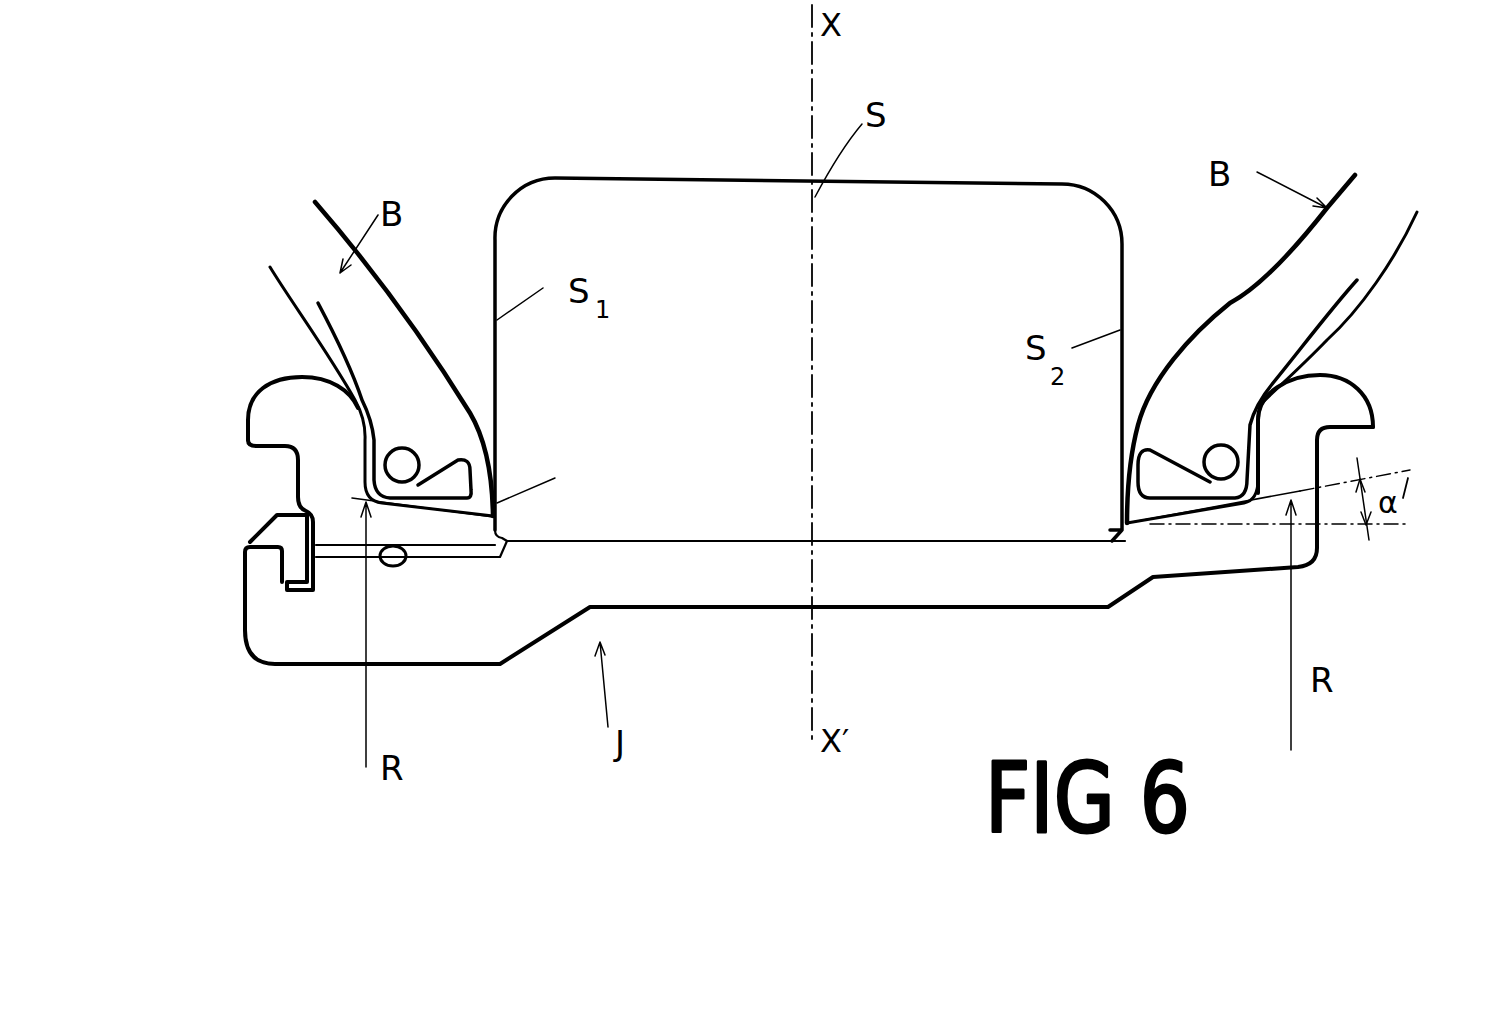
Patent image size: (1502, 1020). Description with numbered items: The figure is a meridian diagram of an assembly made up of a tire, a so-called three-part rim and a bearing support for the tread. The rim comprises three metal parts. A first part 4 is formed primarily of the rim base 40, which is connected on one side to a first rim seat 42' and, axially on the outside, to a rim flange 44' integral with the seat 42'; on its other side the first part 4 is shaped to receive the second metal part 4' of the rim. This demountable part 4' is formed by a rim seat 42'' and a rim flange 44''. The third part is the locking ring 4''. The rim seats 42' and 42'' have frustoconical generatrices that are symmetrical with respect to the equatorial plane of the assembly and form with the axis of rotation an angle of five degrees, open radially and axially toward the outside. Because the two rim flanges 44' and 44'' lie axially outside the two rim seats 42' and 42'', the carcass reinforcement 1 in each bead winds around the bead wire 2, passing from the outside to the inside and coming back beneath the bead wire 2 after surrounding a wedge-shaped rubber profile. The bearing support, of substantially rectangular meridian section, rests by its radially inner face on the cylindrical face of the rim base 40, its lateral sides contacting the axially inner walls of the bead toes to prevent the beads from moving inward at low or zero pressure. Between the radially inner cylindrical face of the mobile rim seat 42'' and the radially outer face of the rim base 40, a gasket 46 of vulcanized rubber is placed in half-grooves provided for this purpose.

The carcass reinforcement 1 is at (1400, 305).
The bead wire 2 is at (402, 463).
The first part of the rim 4 is at (809, 570).
The second metal part of the rim 4' is at (266, 515).
The locking ring 4'' is at (240, 633).
The rim base 40 is at (890, 542).
The first rim seat 42' is at (1213, 592).
The rim seat 42'' is at (453, 616).
The rim flange 44' is at (1365, 426).
The rim flange 44'' is at (268, 401).
The gasket 46 is at (389, 568).